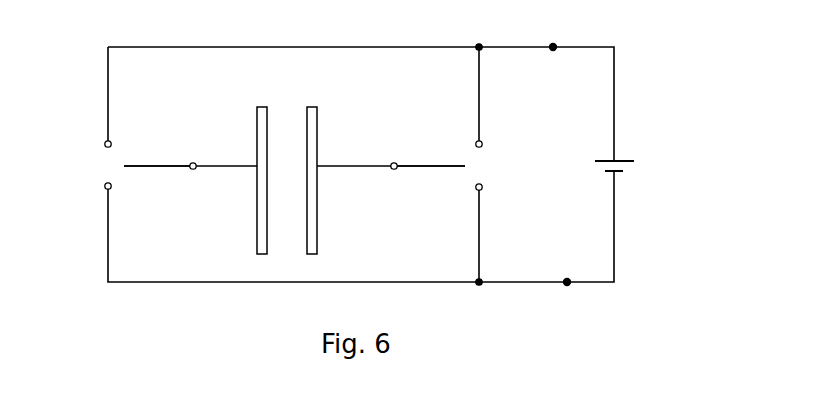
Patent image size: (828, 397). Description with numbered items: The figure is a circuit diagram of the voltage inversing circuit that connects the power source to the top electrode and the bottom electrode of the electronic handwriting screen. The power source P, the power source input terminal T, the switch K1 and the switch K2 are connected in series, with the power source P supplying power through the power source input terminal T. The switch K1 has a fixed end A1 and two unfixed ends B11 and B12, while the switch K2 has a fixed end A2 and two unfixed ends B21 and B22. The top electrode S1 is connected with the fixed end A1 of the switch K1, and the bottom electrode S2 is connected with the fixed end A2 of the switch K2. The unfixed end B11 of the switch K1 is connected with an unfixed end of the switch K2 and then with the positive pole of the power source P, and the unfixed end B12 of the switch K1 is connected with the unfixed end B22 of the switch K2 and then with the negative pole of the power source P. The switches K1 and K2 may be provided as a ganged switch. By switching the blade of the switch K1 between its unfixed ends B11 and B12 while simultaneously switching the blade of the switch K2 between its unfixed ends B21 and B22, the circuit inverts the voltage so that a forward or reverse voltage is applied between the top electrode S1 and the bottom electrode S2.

The unfixed end of switch K2 B21 is at (87, 131).
The unfixed end of switch K2 B22 is at (87, 199).
The unfixed end of switch K1 B11 is at (501, 133).
The unfixed end of switch K1 B12 is at (501, 200).
The fixed end of switch K1 A1 is at (398, 150).
The fixed end of switch K2 A2 is at (197, 151).
The switch K1 is at (431, 196).
The switch K2 is at (157, 195).
The top electrode S1 is at (310, 121).
The bottom electrode S2 is at (263, 127).
The power source input terminal T is at (532, 169).
The power source P is at (632, 164).